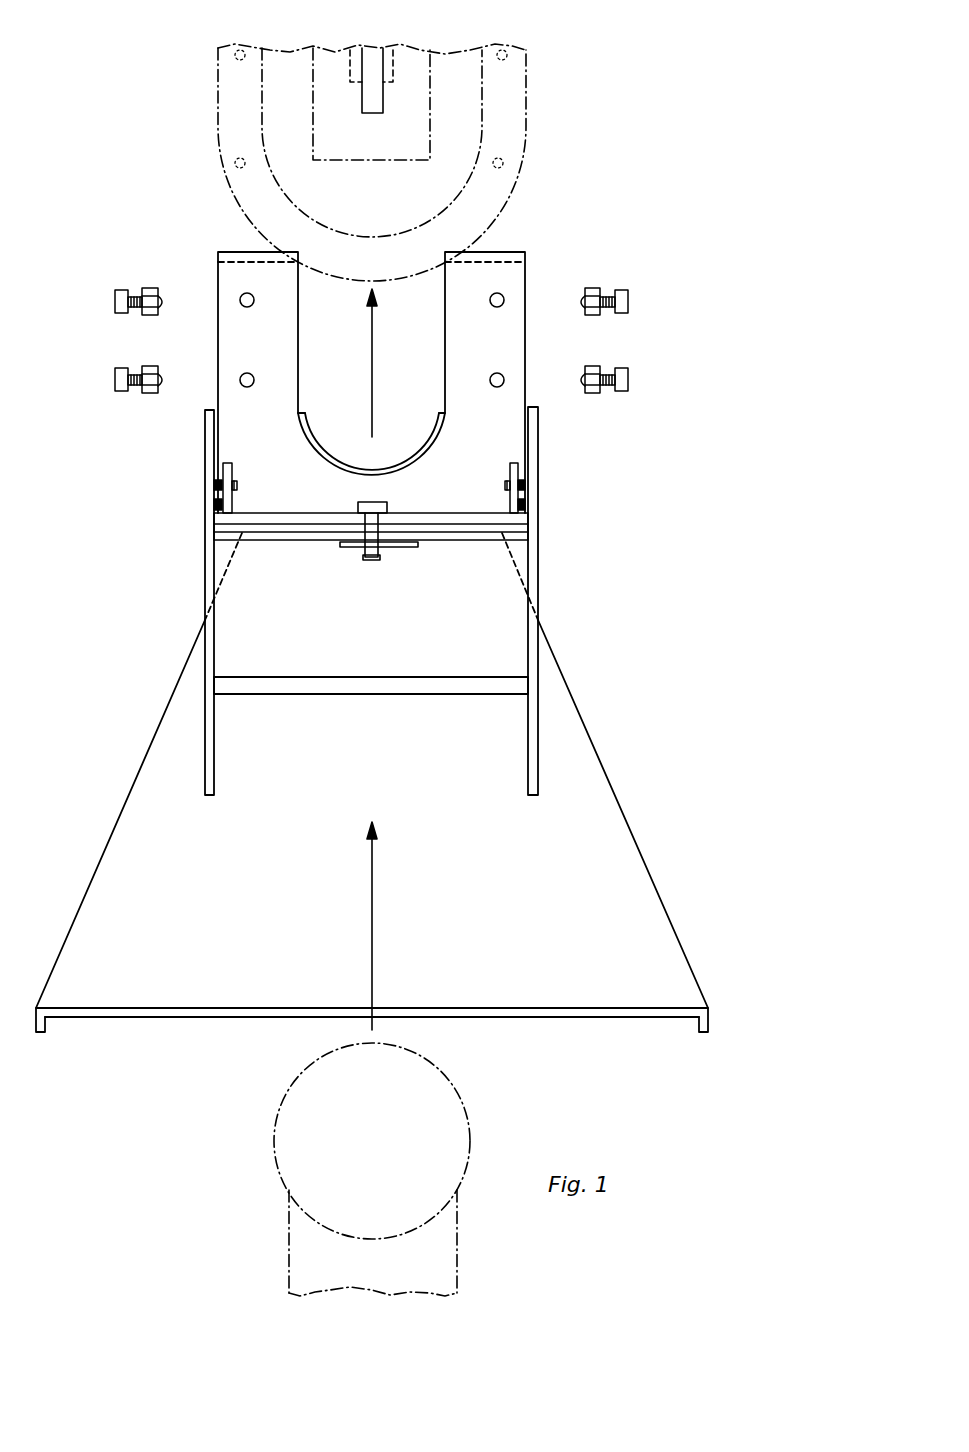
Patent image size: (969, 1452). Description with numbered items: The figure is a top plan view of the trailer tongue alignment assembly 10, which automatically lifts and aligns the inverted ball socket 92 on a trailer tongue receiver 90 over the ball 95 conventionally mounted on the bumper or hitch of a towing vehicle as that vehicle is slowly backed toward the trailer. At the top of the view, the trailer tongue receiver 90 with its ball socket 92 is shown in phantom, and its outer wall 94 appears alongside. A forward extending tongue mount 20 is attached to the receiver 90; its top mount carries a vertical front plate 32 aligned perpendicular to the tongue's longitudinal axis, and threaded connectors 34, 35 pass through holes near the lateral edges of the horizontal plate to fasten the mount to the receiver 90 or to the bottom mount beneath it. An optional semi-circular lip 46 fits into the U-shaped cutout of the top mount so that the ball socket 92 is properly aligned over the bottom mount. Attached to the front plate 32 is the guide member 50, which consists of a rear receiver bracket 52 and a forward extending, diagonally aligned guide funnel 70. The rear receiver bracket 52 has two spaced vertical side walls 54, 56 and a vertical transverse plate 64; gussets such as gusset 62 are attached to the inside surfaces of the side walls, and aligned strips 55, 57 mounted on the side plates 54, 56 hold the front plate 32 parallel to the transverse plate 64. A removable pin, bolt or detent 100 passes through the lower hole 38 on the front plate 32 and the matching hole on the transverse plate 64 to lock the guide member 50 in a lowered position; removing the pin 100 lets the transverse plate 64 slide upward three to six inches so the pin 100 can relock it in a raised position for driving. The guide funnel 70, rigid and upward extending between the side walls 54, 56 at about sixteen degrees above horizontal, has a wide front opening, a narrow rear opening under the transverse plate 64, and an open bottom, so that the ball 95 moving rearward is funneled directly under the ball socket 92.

The trailer tongue alignment assembly 10 is at (570, 108).
The tongue mount 20 is at (399, 372).
The vertical front plate 32 is at (280, 516).
The threaded connector 34 is at (118, 300).
The threaded connector 35 is at (150, 290).
The lower hole 38 is at (255, 341).
The semi-circular lip 46 is at (318, 443).
The guide member 50 is at (595, 601).
The rear receiver bracket 52 is at (273, 602).
The vertical side wall 54 is at (536, 575).
The aligned strip 55 is at (525, 507).
The vertical side wall 56 is at (210, 575).
The aligned strip 57 is at (220, 508).
The gusset 62 is at (513, 473).
The vertical transverse plate 64 is at (228, 472).
The guide funnel 70 is at (613, 785).
The trailer tongue receiver 90 is at (217, 95).
The ball socket 92 is at (316, 175).
The coupler outer wall 94 is at (495, 172).
The ball 95 is at (435, 1098).
The removable pin, bolt or detent 100 is at (372, 556).